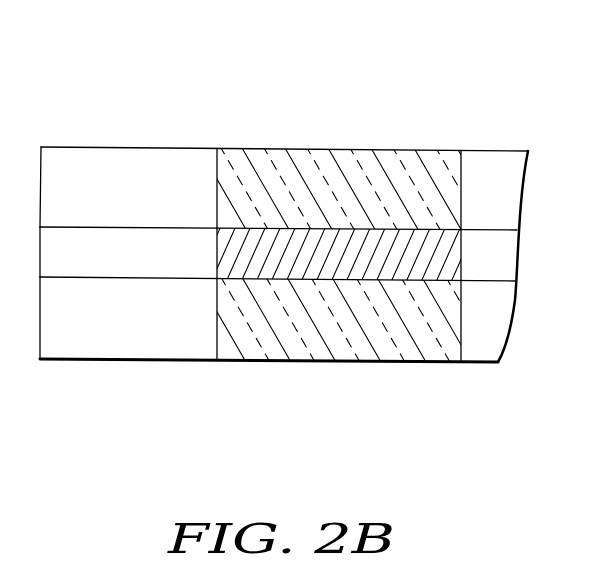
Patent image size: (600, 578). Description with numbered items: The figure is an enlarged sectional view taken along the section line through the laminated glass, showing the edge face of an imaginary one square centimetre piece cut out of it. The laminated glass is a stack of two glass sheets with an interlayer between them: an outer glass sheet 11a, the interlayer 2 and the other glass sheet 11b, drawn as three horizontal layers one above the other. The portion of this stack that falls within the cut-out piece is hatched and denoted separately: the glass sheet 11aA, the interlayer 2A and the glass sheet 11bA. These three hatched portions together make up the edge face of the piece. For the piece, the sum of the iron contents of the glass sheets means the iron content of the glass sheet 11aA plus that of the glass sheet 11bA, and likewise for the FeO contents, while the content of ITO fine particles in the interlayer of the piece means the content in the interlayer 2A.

The recording layer 2 is at (277, 328).
The interlayer 2A is at (285, 267).
The first substrate 11a is at (291, 360).
The glass sheet 11aA is at (423, 325).
The second substrate 11b is at (284, 191).
The glass sheet 11bA is at (297, 177).